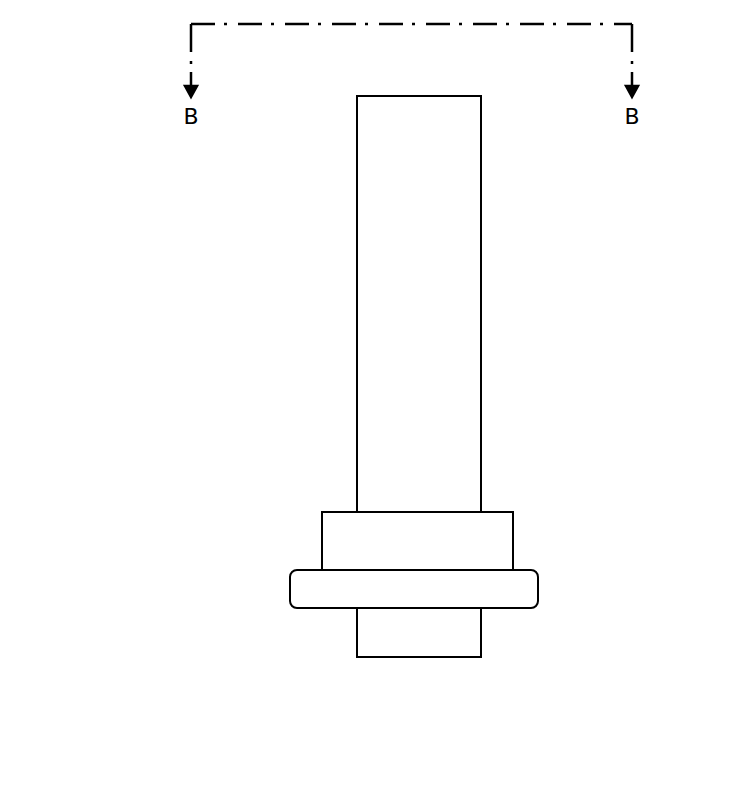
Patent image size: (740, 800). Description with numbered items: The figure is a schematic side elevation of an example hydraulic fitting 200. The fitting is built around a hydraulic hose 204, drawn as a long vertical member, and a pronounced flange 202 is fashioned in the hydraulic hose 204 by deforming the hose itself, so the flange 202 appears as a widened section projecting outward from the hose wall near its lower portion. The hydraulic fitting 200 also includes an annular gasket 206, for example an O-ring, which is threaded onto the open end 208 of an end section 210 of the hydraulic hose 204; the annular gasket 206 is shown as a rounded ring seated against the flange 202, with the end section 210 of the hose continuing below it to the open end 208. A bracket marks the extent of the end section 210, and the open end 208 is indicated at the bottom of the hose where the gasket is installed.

The hydraulic fitting 200 is at (110, 121).
The pronounced flange 202 is at (508, 522).
The hydraulic hose 204 is at (473, 216).
The annular gasket 206 is at (532, 591).
The open end 208 is at (421, 668).
The end section 210 is at (280, 454).